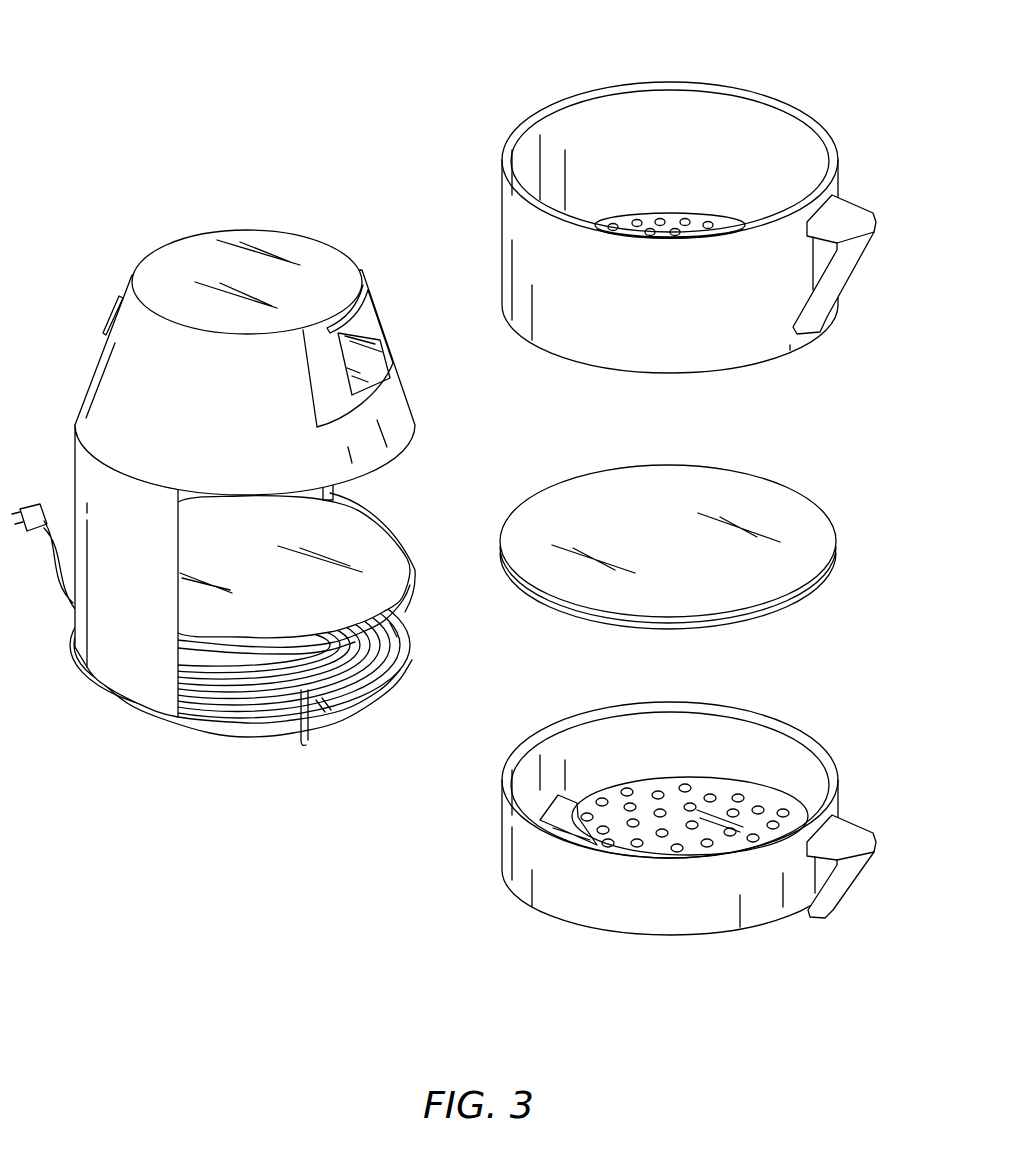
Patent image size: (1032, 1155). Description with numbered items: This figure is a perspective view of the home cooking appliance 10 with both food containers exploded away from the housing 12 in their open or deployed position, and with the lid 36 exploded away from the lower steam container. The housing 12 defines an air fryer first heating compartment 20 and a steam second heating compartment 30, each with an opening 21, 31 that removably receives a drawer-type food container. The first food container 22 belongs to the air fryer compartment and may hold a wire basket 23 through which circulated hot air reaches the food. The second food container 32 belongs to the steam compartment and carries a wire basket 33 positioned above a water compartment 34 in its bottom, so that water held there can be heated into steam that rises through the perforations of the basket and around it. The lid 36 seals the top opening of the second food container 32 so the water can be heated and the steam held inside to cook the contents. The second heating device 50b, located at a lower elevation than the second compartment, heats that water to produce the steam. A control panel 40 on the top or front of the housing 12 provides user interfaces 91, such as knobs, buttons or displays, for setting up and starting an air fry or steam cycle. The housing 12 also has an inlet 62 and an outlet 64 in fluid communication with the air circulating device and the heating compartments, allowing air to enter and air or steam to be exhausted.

The cooking appliance 10 is at (254, 388).
The housing 12 is at (268, 358).
The first heating compartment 20 is at (200, 560).
The opening 21 is at (406, 486).
The first food container 22 is at (720, 222).
The wire basket 23 is at (688, 217).
The second heating compartment 30 is at (200, 665).
The opening 31 is at (420, 658).
The second food container 32 is at (723, 696).
The wire basket 33 is at (702, 787).
The water compartment 34 is at (538, 798).
The lid 36 is at (752, 490).
The control panel 40 is at (399, 326).
The second heating device 50b is at (306, 703).
The inlet 62 is at (362, 288).
The outlet 64 is at (113, 307).
The user interface 91 is at (375, 342).